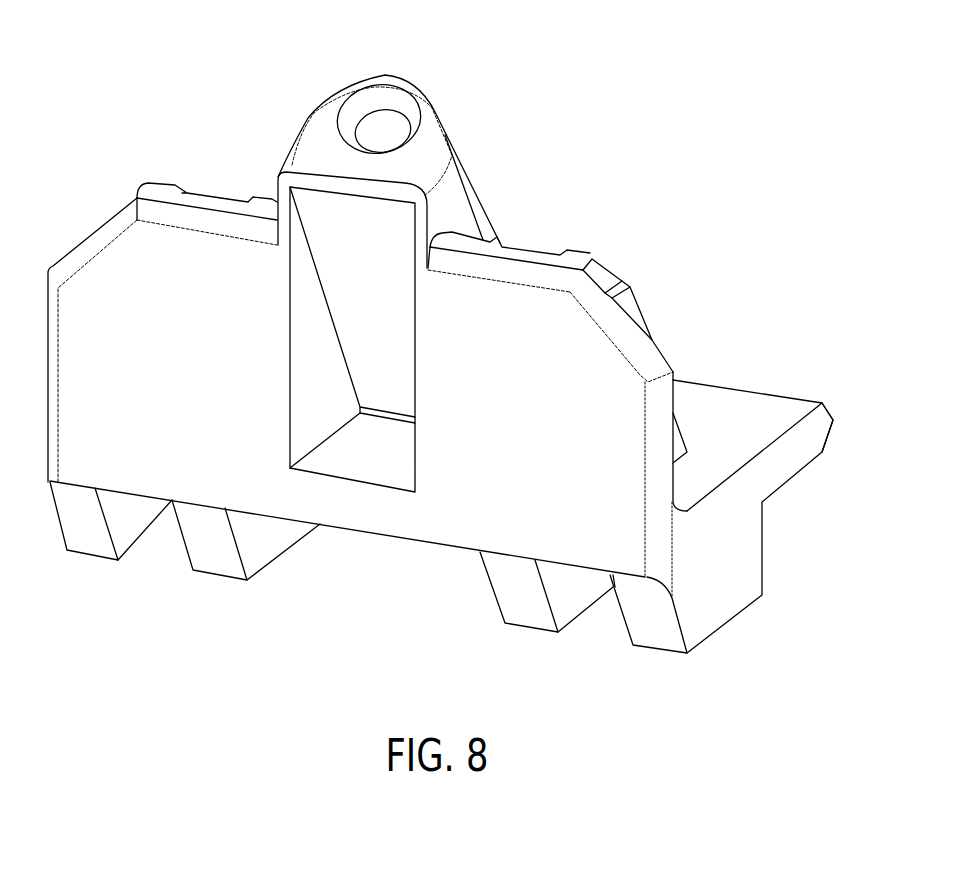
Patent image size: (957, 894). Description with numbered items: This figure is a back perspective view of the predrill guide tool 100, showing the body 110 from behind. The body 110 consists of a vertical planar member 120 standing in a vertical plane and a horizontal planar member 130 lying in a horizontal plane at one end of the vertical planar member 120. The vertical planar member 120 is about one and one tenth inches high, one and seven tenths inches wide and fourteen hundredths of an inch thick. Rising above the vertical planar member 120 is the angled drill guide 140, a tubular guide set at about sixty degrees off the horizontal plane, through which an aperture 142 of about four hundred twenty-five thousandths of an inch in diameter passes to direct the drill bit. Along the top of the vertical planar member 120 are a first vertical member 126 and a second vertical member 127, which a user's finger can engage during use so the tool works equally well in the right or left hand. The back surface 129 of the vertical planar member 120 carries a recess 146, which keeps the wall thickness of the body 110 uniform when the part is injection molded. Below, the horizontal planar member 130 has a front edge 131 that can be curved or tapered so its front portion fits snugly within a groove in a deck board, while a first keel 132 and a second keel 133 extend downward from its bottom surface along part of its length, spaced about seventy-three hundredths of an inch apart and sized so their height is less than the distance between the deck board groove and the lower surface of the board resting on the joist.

The predrill guide tool 100 is at (462, 341).
The body 110 is at (770, 413).
The vertical planar member 120 is at (422, 518).
The first vertical member 126 is at (187, 257).
The second vertical member 127 is at (505, 300).
The back surface 129 is at (622, 387).
The horizontal planar member 130 is at (712, 464).
The front edge 131 is at (833, 420).
The first keel 132 is at (523, 612).
The second keel 133 is at (220, 560).
The angled drill guide 140 is at (443, 113).
The aperture 142 is at (392, 128).
The recess 146 is at (352, 245).